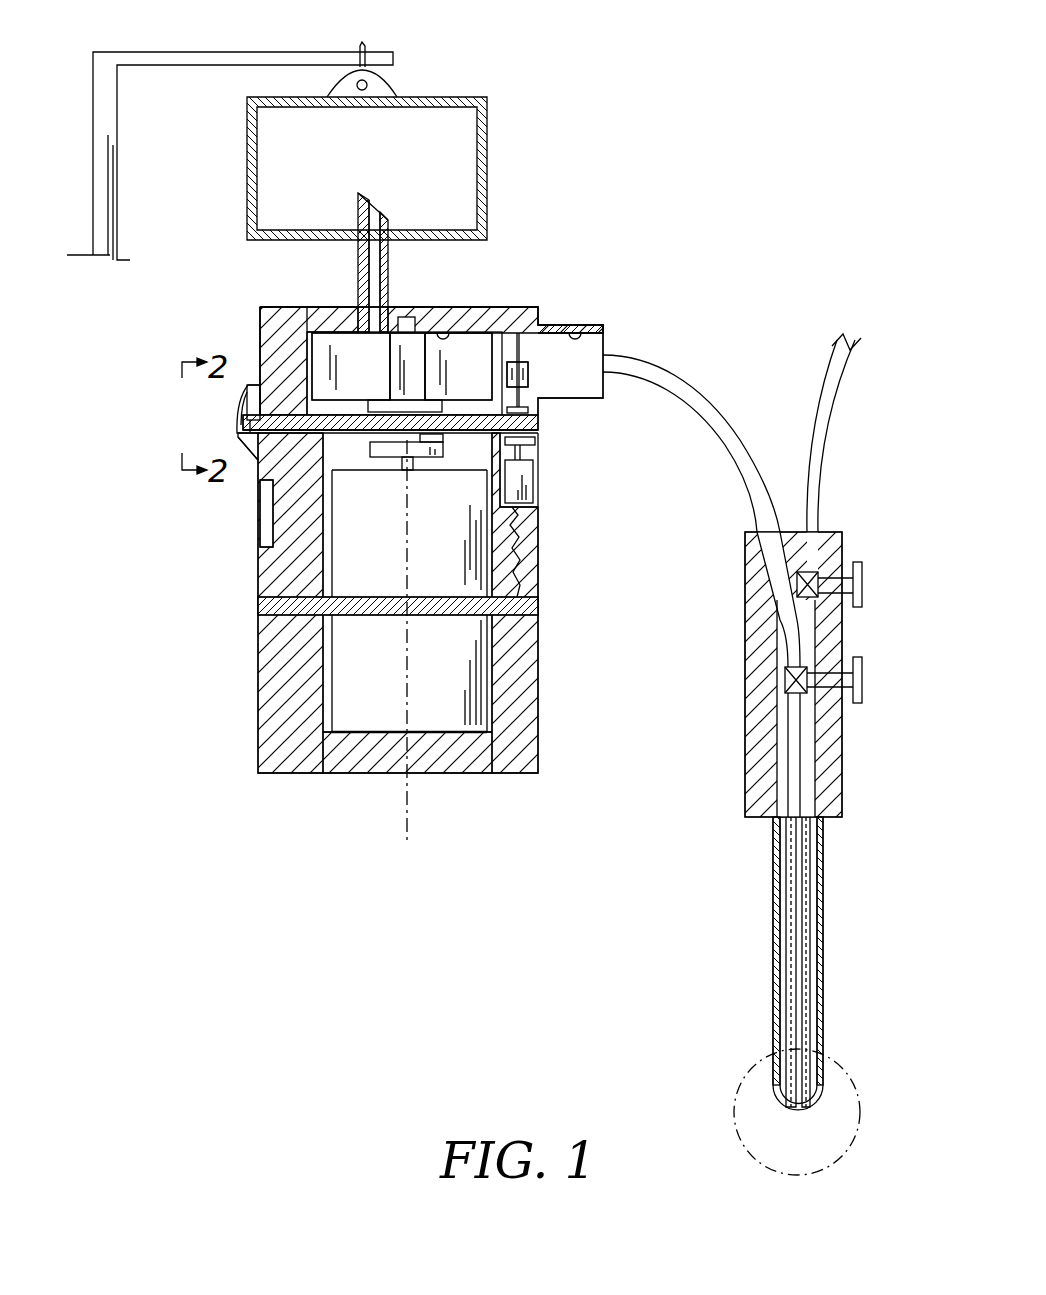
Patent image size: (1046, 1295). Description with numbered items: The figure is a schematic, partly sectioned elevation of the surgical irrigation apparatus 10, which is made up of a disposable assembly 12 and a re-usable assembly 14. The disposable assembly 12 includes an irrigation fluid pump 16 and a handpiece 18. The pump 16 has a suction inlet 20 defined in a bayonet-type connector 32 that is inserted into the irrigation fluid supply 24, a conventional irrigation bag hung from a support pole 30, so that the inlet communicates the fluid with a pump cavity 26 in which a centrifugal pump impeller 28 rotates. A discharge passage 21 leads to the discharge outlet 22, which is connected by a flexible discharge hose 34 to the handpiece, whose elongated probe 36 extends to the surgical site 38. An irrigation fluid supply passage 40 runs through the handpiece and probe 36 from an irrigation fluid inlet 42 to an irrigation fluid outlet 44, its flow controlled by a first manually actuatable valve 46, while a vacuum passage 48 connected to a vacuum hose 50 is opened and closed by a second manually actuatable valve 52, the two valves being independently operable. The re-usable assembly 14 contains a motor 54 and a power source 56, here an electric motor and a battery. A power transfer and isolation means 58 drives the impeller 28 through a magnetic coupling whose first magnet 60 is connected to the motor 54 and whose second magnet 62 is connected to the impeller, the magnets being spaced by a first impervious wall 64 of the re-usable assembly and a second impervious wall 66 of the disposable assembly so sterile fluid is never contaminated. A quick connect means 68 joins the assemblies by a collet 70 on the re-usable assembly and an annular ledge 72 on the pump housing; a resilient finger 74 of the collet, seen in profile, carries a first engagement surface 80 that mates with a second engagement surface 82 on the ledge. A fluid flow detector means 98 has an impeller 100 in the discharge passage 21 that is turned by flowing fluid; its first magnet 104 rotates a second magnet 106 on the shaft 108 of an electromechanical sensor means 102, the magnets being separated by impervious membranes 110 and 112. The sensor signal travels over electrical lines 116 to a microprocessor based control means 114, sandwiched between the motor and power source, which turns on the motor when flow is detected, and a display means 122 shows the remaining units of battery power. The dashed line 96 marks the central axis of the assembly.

The surgical irrigation apparatus 10 is at (657, 95).
The disposable assembly 12 is at (452, 418).
The re-usable assembly 14 is at (540, 665).
The irrigation fluid pump 16 is at (452, 418).
The handpiece 18 is at (752, 768).
The suction inlet 20 is at (378, 276).
The discharge passage 21 is at (575, 340).
The discharge outlet 22 is at (605, 345).
The irrigation fluid supply 24 is at (485, 130).
The pump cavity 26 is at (445, 335).
The centrifugal pump impeller 28 is at (345, 345).
The support pole 30 is at (130, 57).
The bayonet-type connector 32 is at (358, 200).
The flexible discharge hose 34 is at (680, 372).
The elongated probe 36 is at (775, 940).
The surgical site 38 is at (732, 1112).
The irrigation fluid supply passage 40 is at (770, 567).
The irrigation fluid inlet 42 is at (758, 532).
The irrigation fluid outlet 44 is at (797, 1110).
The first manually actuatable valve 46 is at (862, 680).
The vacuum passage 48 is at (813, 548).
The vacuum hose 50 is at (823, 455).
The second manually actuatable valve 52 is at (862, 585).
The motor 54 is at (378, 559).
The power source 56 is at (378, 672).
The power transfer and isolation means 58 is at (378, 408).
The first magnet 60 is at (385, 452).
The second magnet 62 is at (378, 408).
The first impervious wall 64 is at (385, 450).
The second impervious wall 66 is at (500, 335).
The quick connect means 68 is at (240, 420).
The collet 70 is at (240, 436).
The annular ledge 72 is at (240, 420).
The resilient finger 74 is at (240, 436).
The first engagement surface 80 is at (240, 432).
The second engagement surface 82 is at (245, 392).
The central axis 96 is at (408, 820).
The fluid flow detector means 98 is at (528, 373).
The impeller 100 is at (528, 373).
The electromechanical sensor means 102 is at (528, 488).
The first magnet 104 is at (520, 422).
The second magnet 106 is at (538, 446).
The shaft 108 is at (532, 455).
The impervious membrane 110 is at (537, 437).
The impervious membrane 112 is at (430, 443).
The microprocessor based control means 114 is at (540, 604).
The electrical lines 116 is at (528, 540).
The display means 122 is at (265, 525).